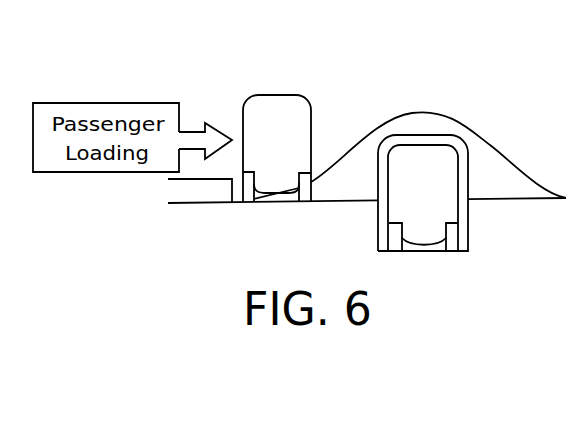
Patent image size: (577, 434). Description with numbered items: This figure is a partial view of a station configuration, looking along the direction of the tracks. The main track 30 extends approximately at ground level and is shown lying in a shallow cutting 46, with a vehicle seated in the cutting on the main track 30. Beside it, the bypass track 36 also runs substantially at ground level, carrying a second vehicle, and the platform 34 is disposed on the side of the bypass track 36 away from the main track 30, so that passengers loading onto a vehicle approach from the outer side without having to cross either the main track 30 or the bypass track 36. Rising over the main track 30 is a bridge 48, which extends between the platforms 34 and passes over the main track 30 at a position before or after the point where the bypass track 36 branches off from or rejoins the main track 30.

The main track 30 is at (424, 252).
The platform 34 is at (203, 205).
The bypass track 36 is at (280, 204).
The shallow cutting 46 is at (471, 224).
The bridge 48 is at (483, 138).